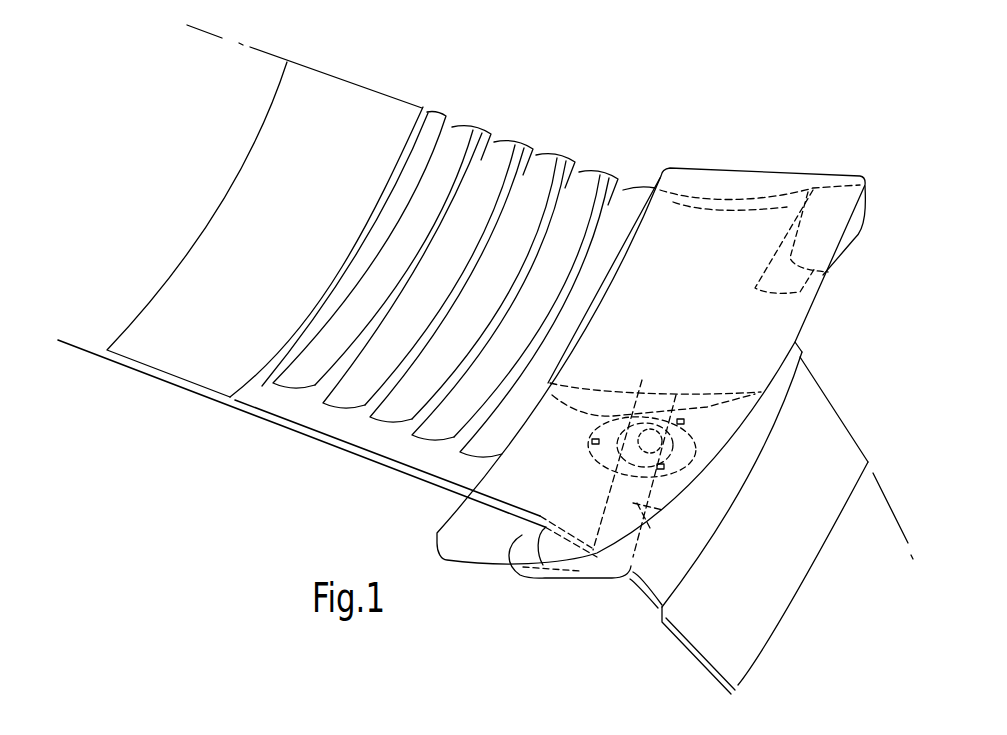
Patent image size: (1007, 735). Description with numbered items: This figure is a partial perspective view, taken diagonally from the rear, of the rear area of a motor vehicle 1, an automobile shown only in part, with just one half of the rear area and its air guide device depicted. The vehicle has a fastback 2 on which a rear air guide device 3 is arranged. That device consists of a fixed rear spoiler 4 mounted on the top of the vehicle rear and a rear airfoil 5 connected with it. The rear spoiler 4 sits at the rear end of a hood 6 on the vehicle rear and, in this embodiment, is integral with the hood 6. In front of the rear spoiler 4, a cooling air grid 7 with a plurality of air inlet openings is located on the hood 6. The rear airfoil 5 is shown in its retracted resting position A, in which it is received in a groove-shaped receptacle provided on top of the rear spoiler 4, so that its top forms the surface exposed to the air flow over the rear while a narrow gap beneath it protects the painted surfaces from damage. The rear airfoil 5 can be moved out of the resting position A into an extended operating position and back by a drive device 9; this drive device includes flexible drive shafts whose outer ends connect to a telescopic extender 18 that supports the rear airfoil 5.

The motor vehicle 1 is at (337, 72).
The fastback 2 is at (411, 96).
The rear air guide device 3 is at (870, 179).
The rear spoiler 4 is at (872, 223).
The rear airfoil 5 is at (710, 225).
The hood 6 is at (823, 428).
The cooling air grid 7 is at (508, 148).
The drive device 9 is at (623, 592).
The telescopic extender 18 is at (703, 552).
The retracted resting position A is at (668, 158).